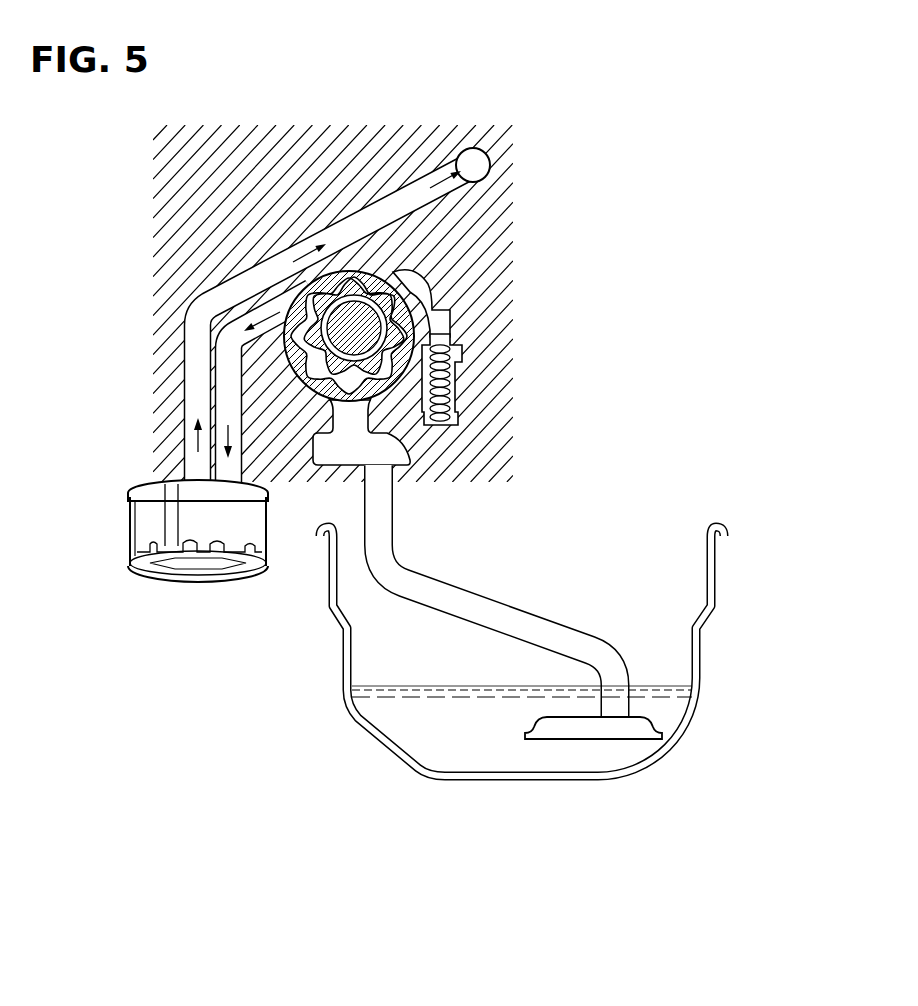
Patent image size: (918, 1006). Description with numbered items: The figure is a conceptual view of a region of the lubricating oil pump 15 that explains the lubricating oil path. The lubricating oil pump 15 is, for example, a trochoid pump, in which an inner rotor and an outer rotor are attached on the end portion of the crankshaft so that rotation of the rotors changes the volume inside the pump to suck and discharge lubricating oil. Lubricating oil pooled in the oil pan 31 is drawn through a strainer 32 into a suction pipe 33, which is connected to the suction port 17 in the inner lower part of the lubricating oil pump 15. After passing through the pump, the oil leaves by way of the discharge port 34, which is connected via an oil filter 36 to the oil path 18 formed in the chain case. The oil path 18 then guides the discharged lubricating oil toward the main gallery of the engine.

The lubricating oil pump 15 is at (385, 399).
The suction port 17 is at (342, 412).
The oil path 18 is at (481, 163).
The oil pan 31 is at (700, 660).
The strainer 32 is at (585, 730).
The suction pipe 33 is at (385, 520).
The discharge port 34 is at (283, 322).
The oil filter 36 is at (128, 538).